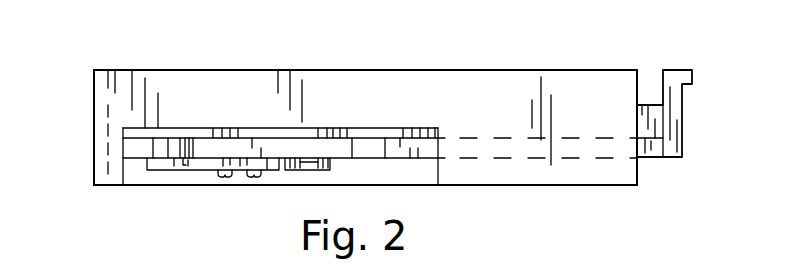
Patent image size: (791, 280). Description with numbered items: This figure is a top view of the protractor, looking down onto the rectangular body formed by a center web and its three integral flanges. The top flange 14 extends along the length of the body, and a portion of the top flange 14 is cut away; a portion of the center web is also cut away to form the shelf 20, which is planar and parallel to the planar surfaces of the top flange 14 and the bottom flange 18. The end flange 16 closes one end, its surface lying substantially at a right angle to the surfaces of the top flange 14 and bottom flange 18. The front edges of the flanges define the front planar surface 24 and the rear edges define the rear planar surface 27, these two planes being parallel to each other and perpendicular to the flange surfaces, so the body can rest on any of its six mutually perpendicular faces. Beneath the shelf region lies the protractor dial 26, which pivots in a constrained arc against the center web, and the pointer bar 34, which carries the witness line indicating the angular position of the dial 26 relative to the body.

The top flange 14 is at (528, 173).
The end flange 16 is at (94, 104).
The bottom flange 18 is at (427, 185).
The shelf 20 is at (132, 131).
The front planar surface 24 is at (607, 185).
The protractor dial 26 is at (394, 160).
The rear planar surface 27 is at (507, 70).
The pointer bar 34 is at (168, 165).